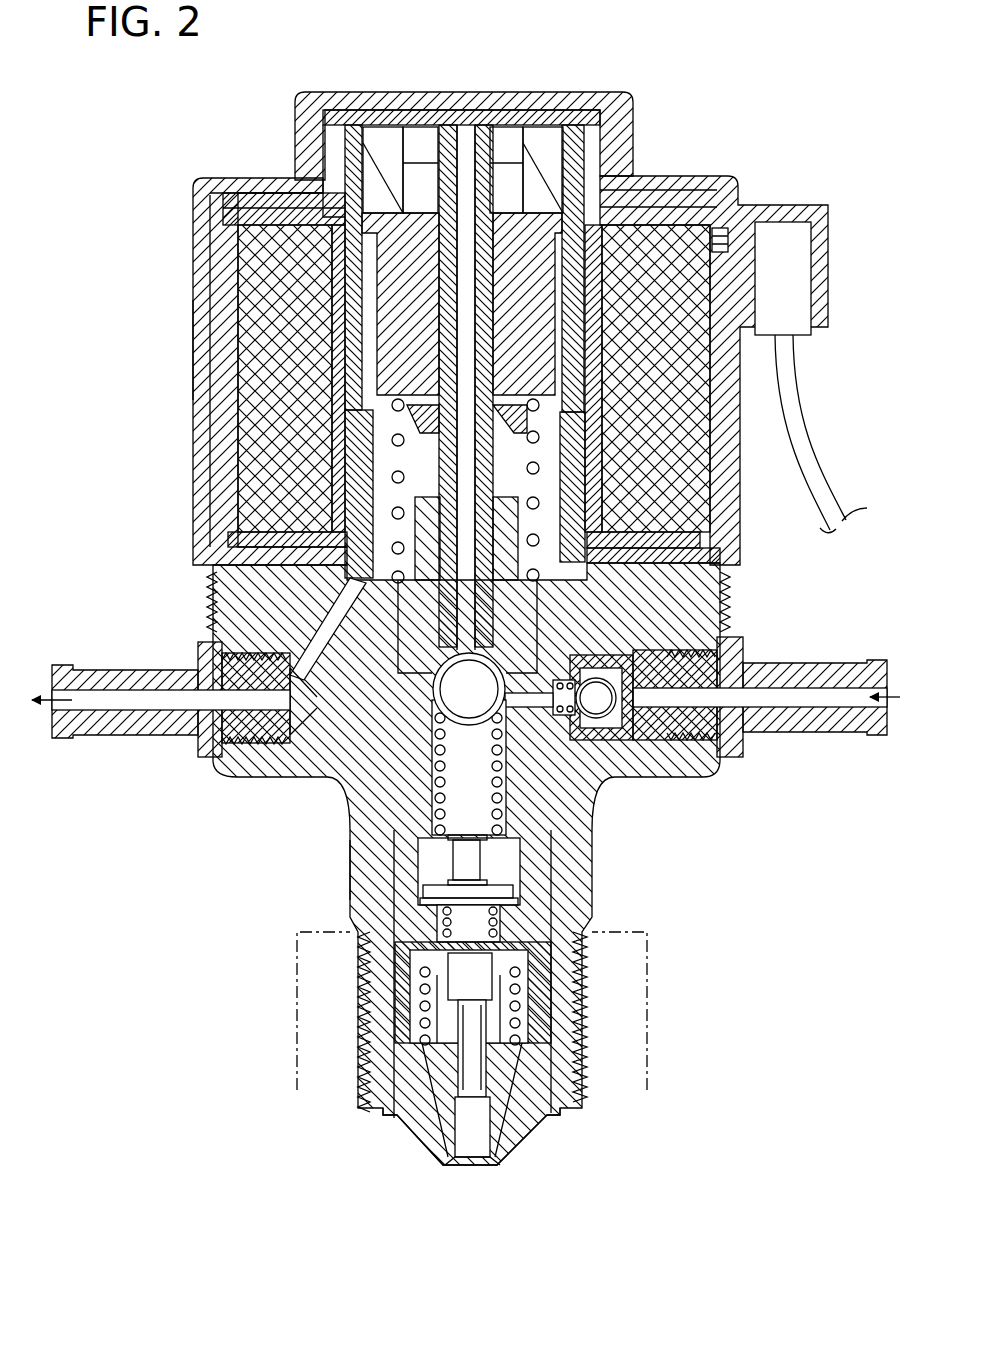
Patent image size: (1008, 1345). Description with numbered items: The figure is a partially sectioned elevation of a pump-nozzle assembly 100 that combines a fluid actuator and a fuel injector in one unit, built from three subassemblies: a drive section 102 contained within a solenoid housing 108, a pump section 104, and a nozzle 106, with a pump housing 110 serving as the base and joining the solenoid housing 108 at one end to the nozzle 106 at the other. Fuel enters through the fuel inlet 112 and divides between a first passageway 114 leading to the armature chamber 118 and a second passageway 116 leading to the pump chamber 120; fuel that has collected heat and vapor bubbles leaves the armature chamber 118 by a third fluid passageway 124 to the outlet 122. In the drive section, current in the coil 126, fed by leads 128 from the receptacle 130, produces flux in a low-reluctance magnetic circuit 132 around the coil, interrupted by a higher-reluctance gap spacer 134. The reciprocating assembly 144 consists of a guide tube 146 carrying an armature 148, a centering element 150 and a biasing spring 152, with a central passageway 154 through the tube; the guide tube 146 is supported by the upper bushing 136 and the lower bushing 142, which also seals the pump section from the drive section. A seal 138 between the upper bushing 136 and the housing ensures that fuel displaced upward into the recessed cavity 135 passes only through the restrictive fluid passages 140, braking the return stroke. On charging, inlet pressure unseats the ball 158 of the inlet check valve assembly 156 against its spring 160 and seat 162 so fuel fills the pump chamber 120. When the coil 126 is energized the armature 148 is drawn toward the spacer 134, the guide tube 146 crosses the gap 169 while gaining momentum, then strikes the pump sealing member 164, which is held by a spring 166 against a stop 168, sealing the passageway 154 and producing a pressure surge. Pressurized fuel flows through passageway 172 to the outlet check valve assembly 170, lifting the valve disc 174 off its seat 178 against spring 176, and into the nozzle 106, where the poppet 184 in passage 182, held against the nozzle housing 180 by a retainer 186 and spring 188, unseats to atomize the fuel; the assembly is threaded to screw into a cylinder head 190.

The pump-nozzle assembly 100 is at (205, 122).
The drive section 102 is at (177, 434).
The pump section 104 is at (266, 887).
The nozzle 106 is at (388, 1120).
The solenoid housing 108 is at (205, 506).
The pump housing 110 is at (347, 762).
The fuel inlet 112 is at (810, 690).
The first passageway 114 is at (690, 592).
The second passageway 116 is at (555, 780).
The armature chamber 118 is at (330, 470).
The pump chamber 120 is at (478, 845).
The outlet 122 is at (128, 702).
The third fluid passageway 124 is at (205, 632).
The coil 126 is at (250, 395).
The leads 128 is at (755, 208).
The receptacle 130 is at (776, 228).
The magnetic circuit 132 is at (215, 212).
The reluctance gap spacer 134 is at (365, 378).
The recessed cavity 135 is at (505, 128).
The upper bushing 136 is at (545, 122).
The seal 138 is at (560, 122).
The fluid passages 140 is at (412, 172).
The lower bushing 142 is at (565, 612).
The reciprocating assembly 144 is at (395, 298).
The guide tube 146 is at (450, 338).
The armature 148 is at (340, 258).
The centering element 150 is at (640, 435).
The spring 152 is at (575, 470).
The central passageway 154 is at (540, 520).
The inlet check valve assembly 156 is at (568, 702).
The ball 158 is at (620, 735).
The spring 160 is at (602, 712).
The seat 162 is at (650, 625).
The pump sealing member 164 is at (469, 689).
The spring 166 is at (470, 822).
The stop 168 is at (318, 735).
The gap 169 is at (347, 591).
The outlet check valve assembly 170 is at (408, 890).
The passageway 172 is at (480, 862).
The valve disc 174 is at (498, 907).
The spring 176 is at (505, 950).
The seat 178 is at (430, 889).
The nozzle housing 180 is at (545, 1078).
The passage 182 is at (487, 1057).
The poppet 184 is at (476, 1140).
The retainer 186 is at (425, 975).
The spring 188 is at (425, 1003).
The cylinder head 190 is at (297, 1048).